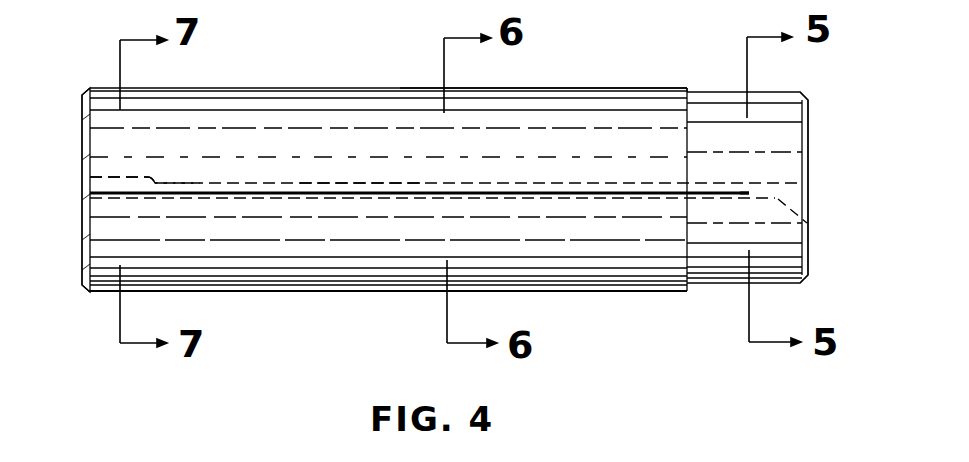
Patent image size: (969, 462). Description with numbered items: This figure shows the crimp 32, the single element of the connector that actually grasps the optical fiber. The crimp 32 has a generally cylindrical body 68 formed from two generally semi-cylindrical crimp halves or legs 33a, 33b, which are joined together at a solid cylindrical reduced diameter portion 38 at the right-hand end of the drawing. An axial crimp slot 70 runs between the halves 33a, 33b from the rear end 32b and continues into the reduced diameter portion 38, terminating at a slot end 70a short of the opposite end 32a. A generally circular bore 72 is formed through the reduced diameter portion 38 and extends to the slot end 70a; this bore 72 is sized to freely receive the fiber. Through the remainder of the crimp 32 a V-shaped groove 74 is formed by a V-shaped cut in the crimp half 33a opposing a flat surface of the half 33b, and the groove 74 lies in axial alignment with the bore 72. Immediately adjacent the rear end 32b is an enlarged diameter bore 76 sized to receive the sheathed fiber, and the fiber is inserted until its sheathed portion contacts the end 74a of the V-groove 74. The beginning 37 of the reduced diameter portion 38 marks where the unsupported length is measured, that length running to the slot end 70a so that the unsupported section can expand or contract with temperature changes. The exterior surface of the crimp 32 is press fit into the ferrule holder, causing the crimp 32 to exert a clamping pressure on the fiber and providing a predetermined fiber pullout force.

The crimp 32 is at (380, 306).
The end 32a is at (811, 112).
The rear end 32b is at (82, 128).
The crimp half 33a is at (540, 88).
The crimp half 33b is at (625, 291).
The beginning of the reduced diameter portion 37 is at (688, 88).
The reduced diameter portion 38 is at (730, 285).
The cylindrical body 68 is at (307, 292).
The crimp slot 70 is at (571, 197).
The slot end 70a is at (748, 193).
The bore 72 is at (812, 226).
The V-shaped groove 74 is at (360, 183).
The end of the V-groove 74a is at (155, 183).
The enlarged diameter bore 76 is at (137, 177).